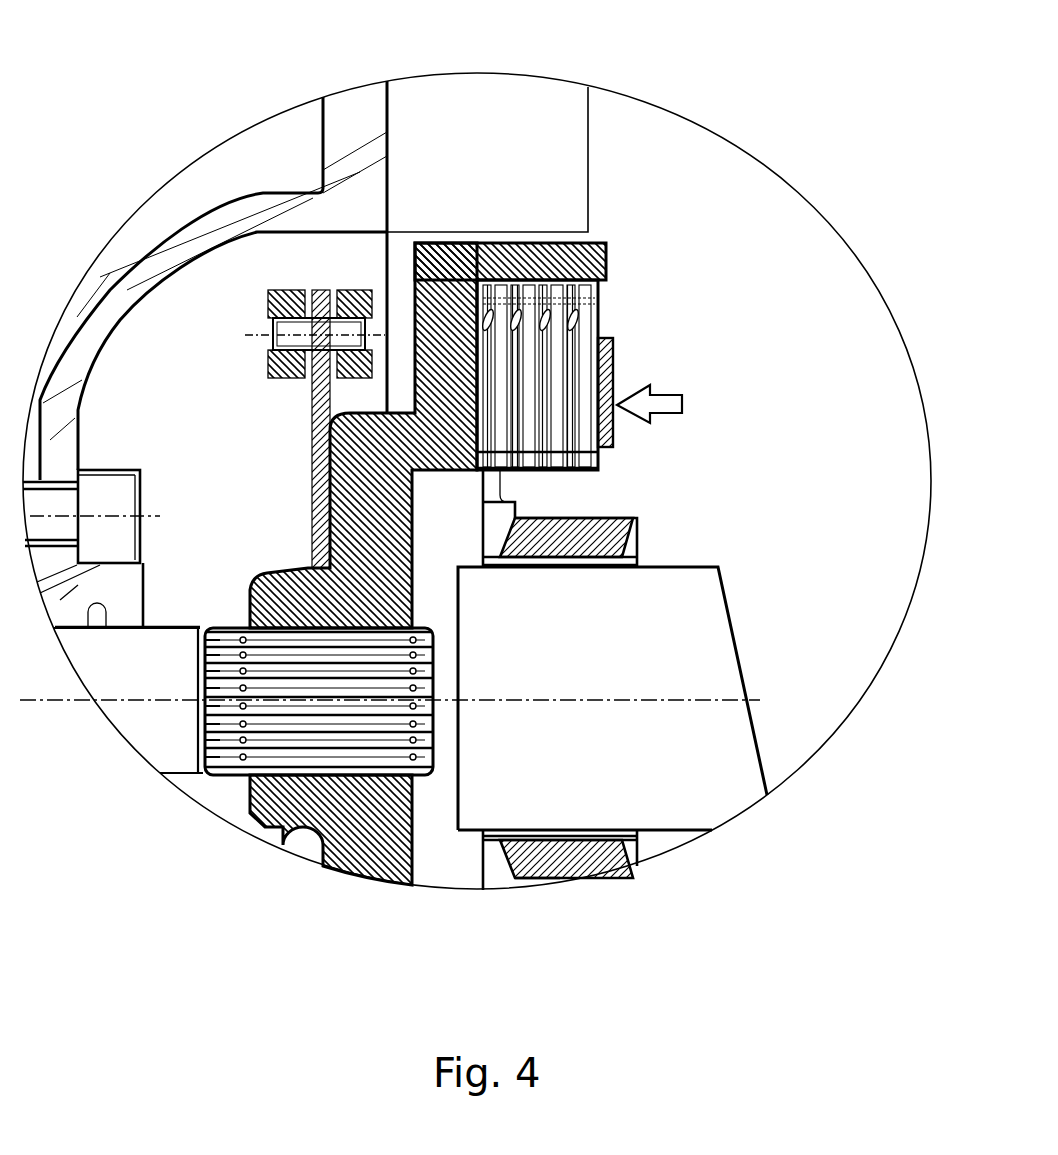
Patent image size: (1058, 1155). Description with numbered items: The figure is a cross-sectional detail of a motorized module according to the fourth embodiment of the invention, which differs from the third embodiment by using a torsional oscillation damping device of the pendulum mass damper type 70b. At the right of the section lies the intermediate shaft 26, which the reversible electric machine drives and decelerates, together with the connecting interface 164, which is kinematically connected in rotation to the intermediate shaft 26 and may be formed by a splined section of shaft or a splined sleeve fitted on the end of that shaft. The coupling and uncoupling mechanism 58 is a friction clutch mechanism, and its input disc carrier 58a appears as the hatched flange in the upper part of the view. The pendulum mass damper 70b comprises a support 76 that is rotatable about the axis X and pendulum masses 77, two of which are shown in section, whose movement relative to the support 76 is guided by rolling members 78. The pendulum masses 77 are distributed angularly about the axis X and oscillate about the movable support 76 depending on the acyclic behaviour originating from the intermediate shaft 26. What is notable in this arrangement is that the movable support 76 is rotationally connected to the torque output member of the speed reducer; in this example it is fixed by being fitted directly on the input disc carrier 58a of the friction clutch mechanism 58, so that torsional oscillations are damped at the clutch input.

The coupling and uncoupling mechanism 58 is at (520, 446).
The input disc carrier 58a is at (477, 243).
The support 76 is at (318, 292).
The pendulum masses 77 is at (268, 298).
The rolling members 78 is at (297, 329).
The pendulum mass damper 70b is at (256, 402).
The axis X is at (488, 695).
The connecting interface 164 is at (530, 843).
The intermediate shaft 26 is at (652, 785).